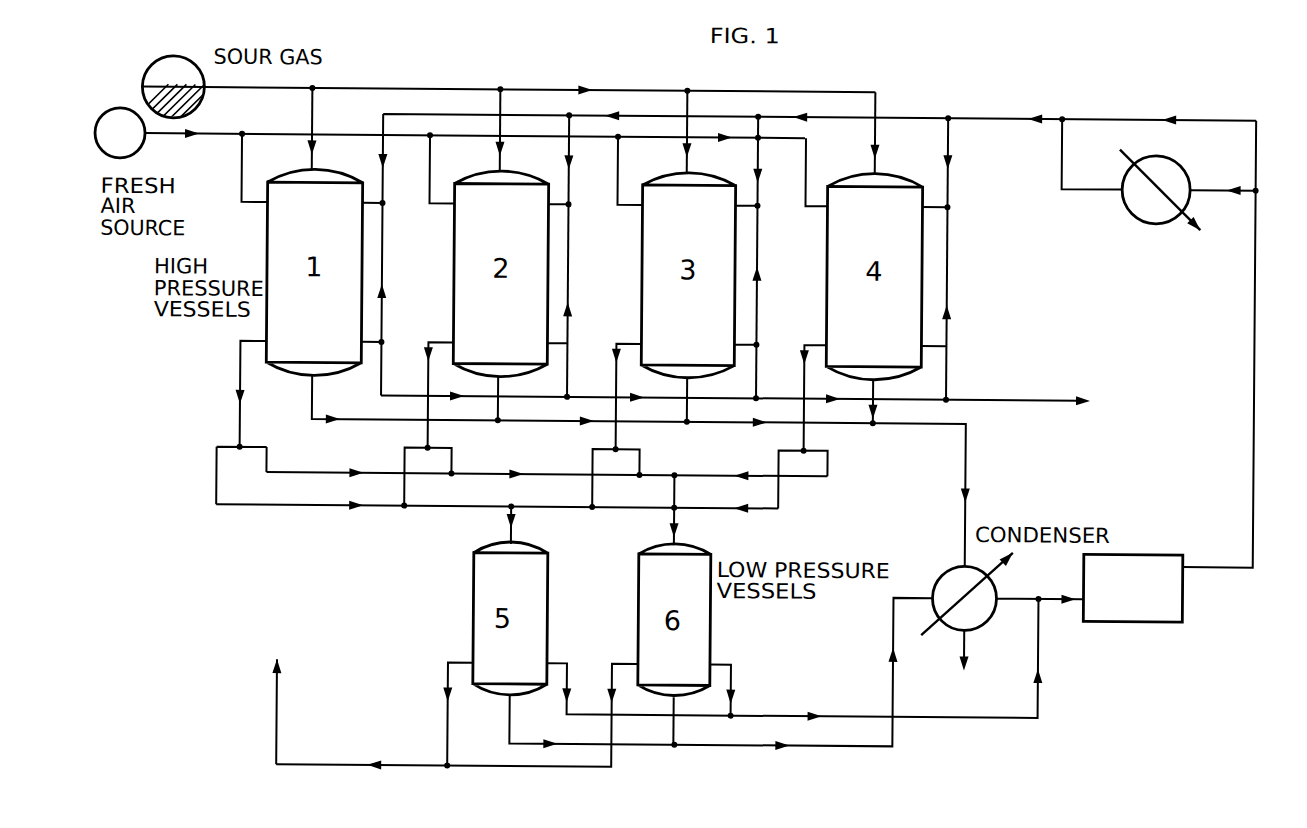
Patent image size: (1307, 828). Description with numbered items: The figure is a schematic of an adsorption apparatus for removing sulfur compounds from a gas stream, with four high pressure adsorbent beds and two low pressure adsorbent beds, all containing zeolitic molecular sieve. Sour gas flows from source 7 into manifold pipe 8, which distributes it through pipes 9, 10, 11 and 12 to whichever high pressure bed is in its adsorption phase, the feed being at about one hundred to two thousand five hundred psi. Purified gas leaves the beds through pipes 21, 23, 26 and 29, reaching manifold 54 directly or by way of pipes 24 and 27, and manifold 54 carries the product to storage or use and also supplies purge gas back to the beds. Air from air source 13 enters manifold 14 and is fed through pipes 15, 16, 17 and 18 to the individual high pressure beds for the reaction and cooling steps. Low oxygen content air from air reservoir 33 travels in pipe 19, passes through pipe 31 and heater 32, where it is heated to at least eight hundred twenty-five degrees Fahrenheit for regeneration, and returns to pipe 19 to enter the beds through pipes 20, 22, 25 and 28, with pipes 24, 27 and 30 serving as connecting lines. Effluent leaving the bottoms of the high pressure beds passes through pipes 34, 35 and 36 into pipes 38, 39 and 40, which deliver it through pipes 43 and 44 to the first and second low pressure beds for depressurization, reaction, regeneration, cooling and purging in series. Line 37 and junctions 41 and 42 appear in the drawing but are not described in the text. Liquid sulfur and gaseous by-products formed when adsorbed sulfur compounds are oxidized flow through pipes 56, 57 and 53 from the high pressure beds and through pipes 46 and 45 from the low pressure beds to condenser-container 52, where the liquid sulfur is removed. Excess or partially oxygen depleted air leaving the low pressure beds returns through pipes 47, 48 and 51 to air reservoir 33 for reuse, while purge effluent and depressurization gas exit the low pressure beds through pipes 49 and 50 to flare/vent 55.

The sour gas source 7 is at (173, 59).
The manifold pipe 8 is at (546, 89).
The pipe 9 is at (311, 112).
The pipe 10 is at (498, 100).
The pipe 11 is at (685, 105).
The pipe 12 is at (873, 132).
The air source 13 is at (97, 123).
The air manifold 14 is at (222, 138).
The pipe 15 is at (243, 170).
The pipe 16 is at (431, 171).
The pipe 17 is at (619, 176).
The pipe 18 is at (806, 184).
The pipe 19 is at (1000, 118).
The pipe 20 is at (370, 206).
The pipe 21 is at (370, 343).
The pipe 22 is at (556, 207).
The pipe 23 is at (568, 331).
The pipe 24 is at (568, 282).
The pipe 25 is at (748, 207).
The pipe 26 is at (757, 343).
The pipe 27 is at (757, 162).
The pipe 28 is at (933, 206).
The pipe 29 is at (928, 344).
The pipe 30 is at (947, 274).
The pipe 31 is at (1060, 157).
The heater 32 is at (1130, 209).
The air reservoir 33 is at (1166, 595).
The pipe 34 is at (238, 377).
The pipe 35 is at (430, 384).
The pipe 36 is at (618, 390).
The bottom outlet line of vessel 4 37 is at (804, 382).
The pipe 38 is at (299, 473).
The pipe 39 is at (320, 509).
The pipe 40 is at (453, 459).
The valve junction for vessel 3 outlet 41 is at (640, 464).
The valve junction for vessel 4 outlet 42 is at (828, 474).
The pipe 43 is at (514, 531).
The pipe 44 is at (678, 531).
The pipe 45 is at (514, 706).
The pipe 46 is at (679, 746).
The pipe 47 is at (560, 664).
The pipe 48 is at (735, 672).
The pipe 49 is at (450, 721).
The pipe 50 is at (558, 768).
The pipe 51 is at (1062, 596).
The condenser-container 52 is at (962, 666).
The pipe 53 is at (397, 424).
The purified gas manifold 54 is at (312, 389).
The flare/vent 55 is at (279, 718).
The pipe 56 is at (688, 410).
The pipe 57 is at (876, 423).